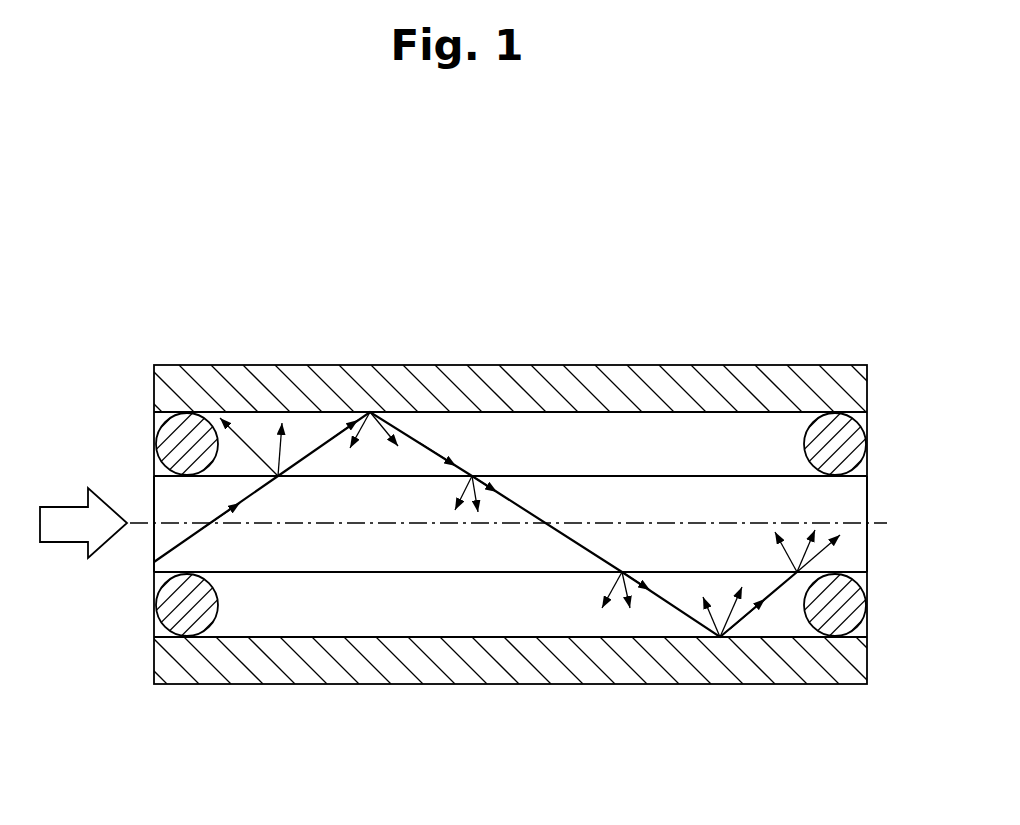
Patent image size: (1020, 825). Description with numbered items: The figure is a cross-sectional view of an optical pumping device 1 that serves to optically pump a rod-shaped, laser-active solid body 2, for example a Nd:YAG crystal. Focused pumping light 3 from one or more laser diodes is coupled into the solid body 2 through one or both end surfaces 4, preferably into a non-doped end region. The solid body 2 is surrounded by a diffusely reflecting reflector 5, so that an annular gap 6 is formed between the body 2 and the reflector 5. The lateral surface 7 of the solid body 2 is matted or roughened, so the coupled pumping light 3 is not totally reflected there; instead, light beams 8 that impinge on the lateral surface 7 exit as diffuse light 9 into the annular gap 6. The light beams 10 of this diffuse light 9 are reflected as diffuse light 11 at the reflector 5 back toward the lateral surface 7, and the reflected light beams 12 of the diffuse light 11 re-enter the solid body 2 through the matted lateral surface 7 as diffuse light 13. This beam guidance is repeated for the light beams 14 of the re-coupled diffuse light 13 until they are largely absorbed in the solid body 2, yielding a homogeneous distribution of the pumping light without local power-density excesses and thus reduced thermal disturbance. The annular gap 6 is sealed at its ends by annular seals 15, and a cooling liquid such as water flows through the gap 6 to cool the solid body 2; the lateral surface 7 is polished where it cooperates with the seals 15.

The optical pumping device 1 is at (506, 420).
The laser-active solid body 2 is at (725, 492).
The pumping light 3 is at (70, 532).
The end surface 4 is at (138, 538).
The diffusely reflecting reflector 5 is at (315, 667).
The annular gap 6 is at (592, 625).
The lateral surface 7 is at (318, 582).
The light beams 8 is at (197, 527).
The diffuse light 9 is at (258, 438).
The light beams 10 is at (328, 441).
The diffuse light 11 is at (378, 448).
The reflected light beams 12 is at (420, 447).
The diffuse light 13 is at (470, 518).
The light beams 14 is at (527, 507).
The annular seals 15 is at (186, 445).